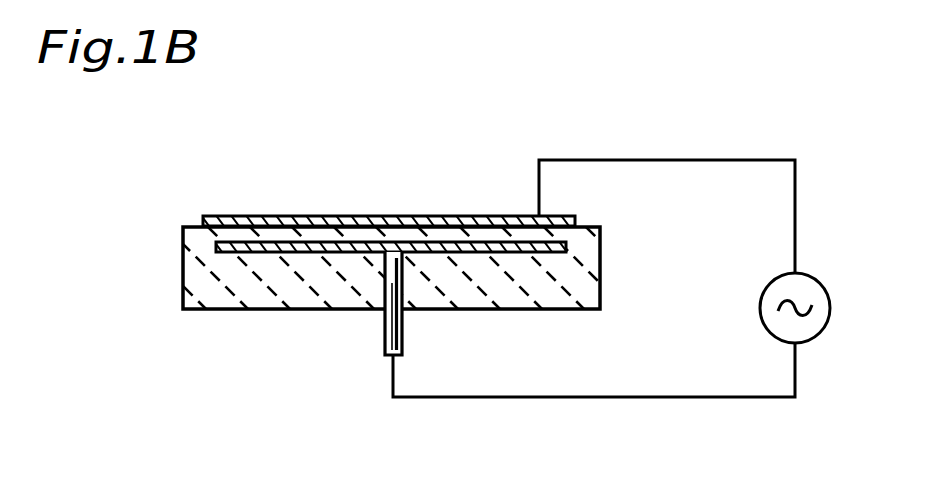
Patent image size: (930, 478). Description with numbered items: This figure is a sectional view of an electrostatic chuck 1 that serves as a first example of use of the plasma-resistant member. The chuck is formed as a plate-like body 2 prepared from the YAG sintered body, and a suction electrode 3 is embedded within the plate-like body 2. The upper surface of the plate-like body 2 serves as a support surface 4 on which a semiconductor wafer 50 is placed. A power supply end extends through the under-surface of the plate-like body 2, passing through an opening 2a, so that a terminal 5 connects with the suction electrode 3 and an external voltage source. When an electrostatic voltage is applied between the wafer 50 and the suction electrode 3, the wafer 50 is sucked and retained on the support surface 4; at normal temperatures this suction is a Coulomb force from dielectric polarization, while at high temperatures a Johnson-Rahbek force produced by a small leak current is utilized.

The electrostatic chuck 1 is at (148, 216).
The plate-like body 2 is at (190, 278).
The terminal hole in base body 2a is at (380, 290).
The suction electrode 3 is at (300, 254).
The support surface 4 is at (190, 224).
The terminal lead pin 5 is at (407, 333).
The semiconductor wafer 50 is at (420, 217).